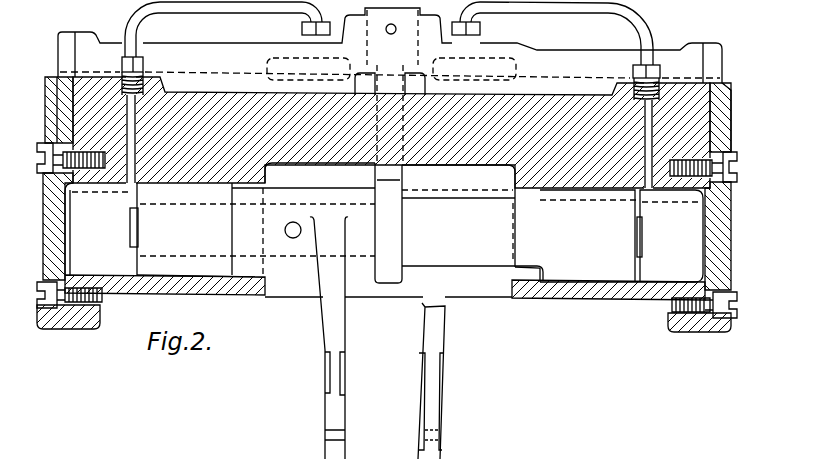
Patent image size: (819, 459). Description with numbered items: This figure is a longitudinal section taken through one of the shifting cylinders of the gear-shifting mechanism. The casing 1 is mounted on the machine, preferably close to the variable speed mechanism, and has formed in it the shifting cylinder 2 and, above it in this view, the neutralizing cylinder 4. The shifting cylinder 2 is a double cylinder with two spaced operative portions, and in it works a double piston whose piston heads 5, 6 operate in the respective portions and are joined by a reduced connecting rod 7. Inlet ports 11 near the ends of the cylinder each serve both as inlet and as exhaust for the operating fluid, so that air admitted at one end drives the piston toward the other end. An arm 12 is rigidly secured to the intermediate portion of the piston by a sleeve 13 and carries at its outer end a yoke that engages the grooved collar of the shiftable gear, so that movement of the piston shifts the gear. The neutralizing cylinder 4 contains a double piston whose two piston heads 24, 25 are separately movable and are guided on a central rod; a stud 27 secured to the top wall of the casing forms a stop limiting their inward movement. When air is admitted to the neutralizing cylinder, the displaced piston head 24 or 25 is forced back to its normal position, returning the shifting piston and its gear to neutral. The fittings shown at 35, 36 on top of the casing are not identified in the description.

The casing 1 is at (588, 293).
The shifting cylinder 2 is at (110, 280).
The neutralizing cylinder 4 is at (563, 80).
The piston head 5 is at (567, 263).
The piston head 6 is at (170, 263).
The connecting rod 7 is at (487, 257).
The inlet ports 11 is at (128, 187).
The arms 12 is at (423, 323).
The sleeves 13 is at (302, 263).
The piston head 24 is at (600, 192).
The piston head 25 is at (193, 188).
The stud 27 is at (390, 86).
The right tube 35 is at (565, 13).
The left tube 36 is at (243, 13).